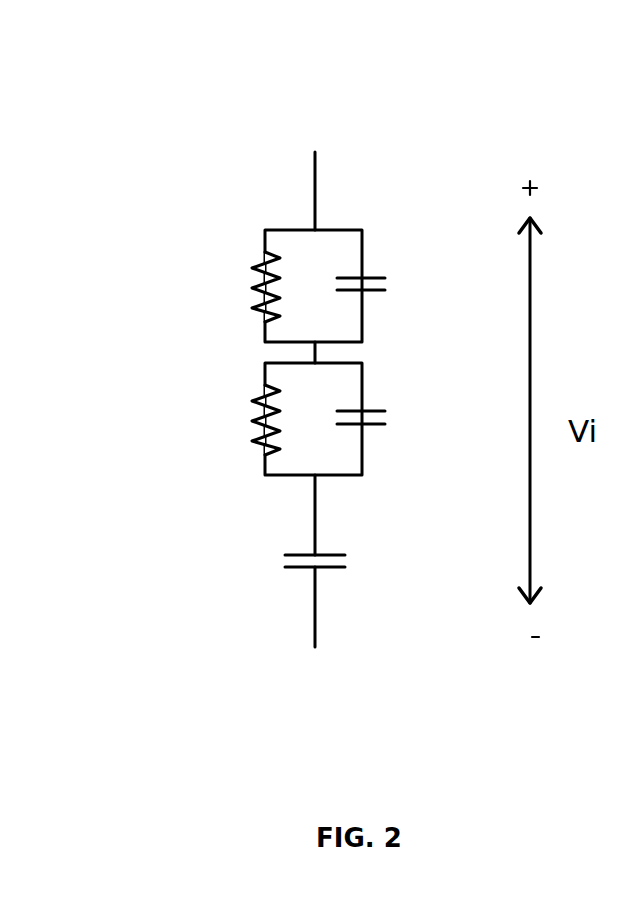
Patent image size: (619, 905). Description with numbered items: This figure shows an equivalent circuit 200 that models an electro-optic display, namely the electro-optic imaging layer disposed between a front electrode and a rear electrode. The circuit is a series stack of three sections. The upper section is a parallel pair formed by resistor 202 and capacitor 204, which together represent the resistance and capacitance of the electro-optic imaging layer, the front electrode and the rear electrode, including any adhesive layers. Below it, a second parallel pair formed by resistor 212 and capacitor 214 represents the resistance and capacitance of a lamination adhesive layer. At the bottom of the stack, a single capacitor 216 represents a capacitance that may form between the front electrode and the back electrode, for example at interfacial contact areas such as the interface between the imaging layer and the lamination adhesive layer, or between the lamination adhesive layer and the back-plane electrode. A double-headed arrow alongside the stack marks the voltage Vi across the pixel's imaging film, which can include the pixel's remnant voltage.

The equivalent circuit model 200 is at (88, 54).
The resistor 202 is at (238, 275).
The capacitor 204 is at (390, 281).
The resistor 212 is at (245, 410).
The capacitor 214 is at (395, 420).
The capacitor 216 is at (363, 557).